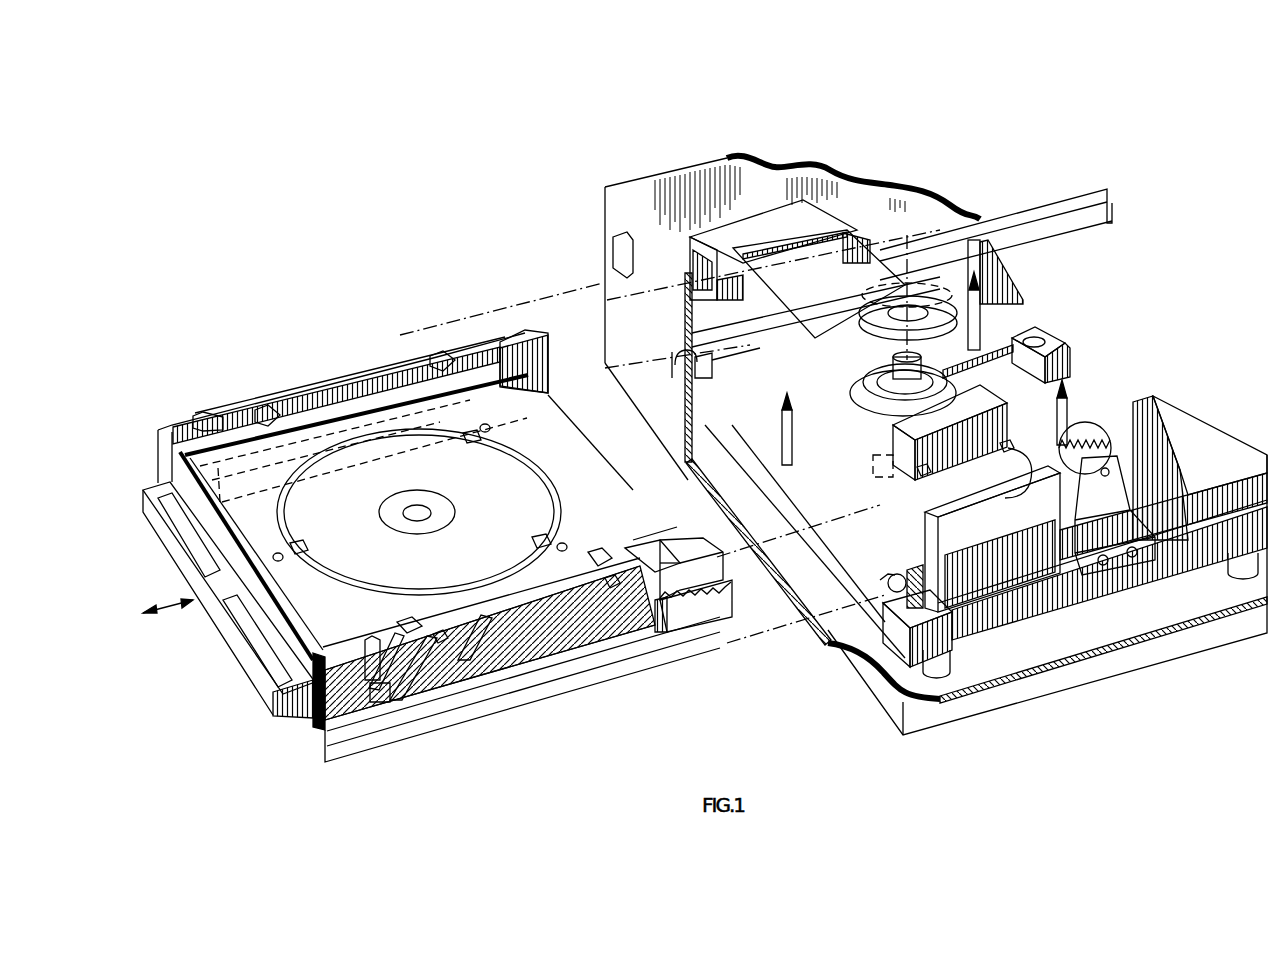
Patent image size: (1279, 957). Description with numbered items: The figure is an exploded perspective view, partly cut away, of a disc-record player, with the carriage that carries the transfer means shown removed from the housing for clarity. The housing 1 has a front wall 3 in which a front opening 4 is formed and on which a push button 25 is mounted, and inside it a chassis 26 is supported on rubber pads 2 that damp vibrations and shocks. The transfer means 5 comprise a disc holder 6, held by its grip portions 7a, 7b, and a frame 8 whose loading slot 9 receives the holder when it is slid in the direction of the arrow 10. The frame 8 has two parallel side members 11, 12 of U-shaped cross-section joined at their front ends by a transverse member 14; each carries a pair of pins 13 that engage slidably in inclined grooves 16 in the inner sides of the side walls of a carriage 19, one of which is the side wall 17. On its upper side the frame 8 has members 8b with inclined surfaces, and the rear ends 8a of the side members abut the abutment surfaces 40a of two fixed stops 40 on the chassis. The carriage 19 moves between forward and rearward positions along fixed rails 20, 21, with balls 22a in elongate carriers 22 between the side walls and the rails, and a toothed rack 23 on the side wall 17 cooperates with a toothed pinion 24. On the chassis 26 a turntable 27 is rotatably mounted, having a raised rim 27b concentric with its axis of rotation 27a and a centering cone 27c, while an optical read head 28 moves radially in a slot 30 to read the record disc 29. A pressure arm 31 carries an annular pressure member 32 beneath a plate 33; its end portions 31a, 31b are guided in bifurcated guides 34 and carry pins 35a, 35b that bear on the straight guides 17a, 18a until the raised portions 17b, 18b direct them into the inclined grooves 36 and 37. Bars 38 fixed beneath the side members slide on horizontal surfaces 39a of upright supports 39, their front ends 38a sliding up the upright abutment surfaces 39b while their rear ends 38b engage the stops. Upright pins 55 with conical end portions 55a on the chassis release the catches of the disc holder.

The housing 1 is at (1137, 653).
The rubber pads 2 is at (932, 685).
The front wall 3 is at (865, 673).
The front opening 4 is at (648, 300).
The transfer means 5 is at (280, 725).
The disc holder 6 is at (260, 668).
The grip portion 7a is at (190, 547).
The grip portion 7b is at (255, 648).
The frame 8 is at (508, 360).
The rear ends 8a is at (535, 356).
The members 8b is at (268, 407).
The loading slot 9 is at (283, 692).
The arrow 10 is at (168, 619).
The side member 11 is at (337, 640).
The side member 12 is at (320, 420).
The pins 13 is at (445, 630).
The transverse member 14 is at (276, 588).
The inclined grooves 16 is at (353, 383).
The side wall 17 is at (689, 545).
The straight guide 17a is at (668, 552).
The raised portion 17b is at (374, 680).
The straight guide 18a is at (442, 364).
The raised portion 18b is at (220, 414).
The carriage 19 is at (590, 695).
The rail 20 is at (955, 632).
The rail 21 is at (1058, 197).
The elongate carriers 22 is at (818, 630).
The balls 22a is at (893, 577).
The toothed rack 23 is at (692, 618).
The toothed pinion 24 is at (1098, 433).
The push button 25 is at (613, 243).
The chassis 26 is at (832, 570).
The turntable 27 is at (880, 405).
The axis of rotation 27a is at (907, 290).
The raised rim 27b is at (837, 343).
The centering cone 27c is at (975, 361).
The optical read head 28 is at (1042, 345).
The record disc 29 is at (398, 580).
The slot 30 is at (1050, 345).
The pressure arm 31 is at (853, 225).
The end portion 31a is at (948, 412).
The end portion 31b is at (823, 225).
The annular pressure member 32 is at (867, 360).
The plate 33 is at (930, 221).
The bifurcated guides 34 is at (767, 193).
The pin 35a is at (925, 476).
The pin 35b is at (995, 462).
The inclined grooves 36 is at (247, 426).
The inclined grooves 37 is at (340, 388).
The bars 38 is at (268, 480).
The front ends 38a is at (192, 421).
The rear ends 38b is at (530, 410).
The upright supports 39 is at (728, 372).
The horizontal surfaces 39a is at (672, 355).
The upright abutment surface 39b is at (733, 360).
The fixed stops 40 is at (1002, 261).
The abutment surfaces 40a is at (957, 242).
The upright pins 55 is at (980, 318).
The conical end portions 55a is at (1050, 262).